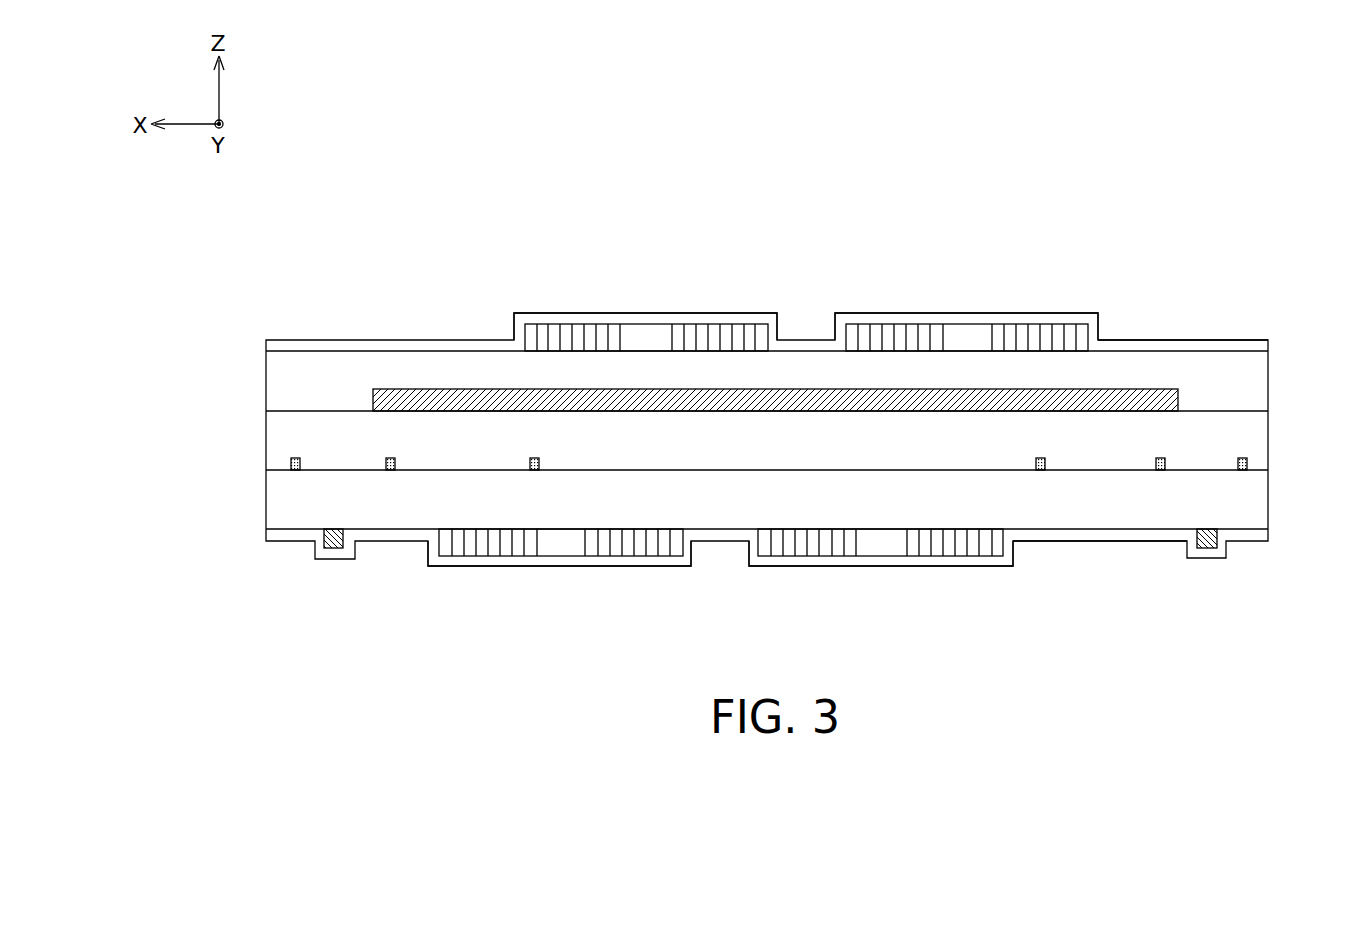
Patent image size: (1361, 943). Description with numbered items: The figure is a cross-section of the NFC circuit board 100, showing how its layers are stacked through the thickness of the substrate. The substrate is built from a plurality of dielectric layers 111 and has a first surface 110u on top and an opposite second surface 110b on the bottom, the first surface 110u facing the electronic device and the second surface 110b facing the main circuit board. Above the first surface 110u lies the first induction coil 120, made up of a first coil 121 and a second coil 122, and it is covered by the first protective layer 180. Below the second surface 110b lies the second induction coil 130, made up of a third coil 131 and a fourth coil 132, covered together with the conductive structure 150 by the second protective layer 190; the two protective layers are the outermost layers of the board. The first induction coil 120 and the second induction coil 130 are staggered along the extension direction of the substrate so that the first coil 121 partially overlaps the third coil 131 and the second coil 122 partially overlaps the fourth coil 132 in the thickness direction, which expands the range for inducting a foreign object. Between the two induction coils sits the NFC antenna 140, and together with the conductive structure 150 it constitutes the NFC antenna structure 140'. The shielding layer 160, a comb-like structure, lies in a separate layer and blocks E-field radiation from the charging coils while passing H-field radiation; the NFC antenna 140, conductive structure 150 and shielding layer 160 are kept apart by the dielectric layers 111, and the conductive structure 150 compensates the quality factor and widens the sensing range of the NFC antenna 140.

The NFC circuit board 100 is at (457, 155).
The first surface 110u is at (1233, 350).
The second surface 110b is at (1145, 531).
The dielectric layers 111 is at (1250, 382).
The first induction coil 120 is at (806, 279).
The first coil 121 is at (724, 330).
The second coil 122 is at (959, 297).
The second induction coil 130 is at (721, 601).
The third coil 131 is at (482, 546).
The fourth coil 132 is at (802, 546).
The NFC antenna 140 is at (719, 462).
The NFC antenna structure 140' is at (166, 520).
The conductive structure 150 is at (333, 548).
The shielding layer 160 is at (373, 410).
The first protective layer 180 is at (1085, 320).
The second protective layer 190 is at (1047, 536).